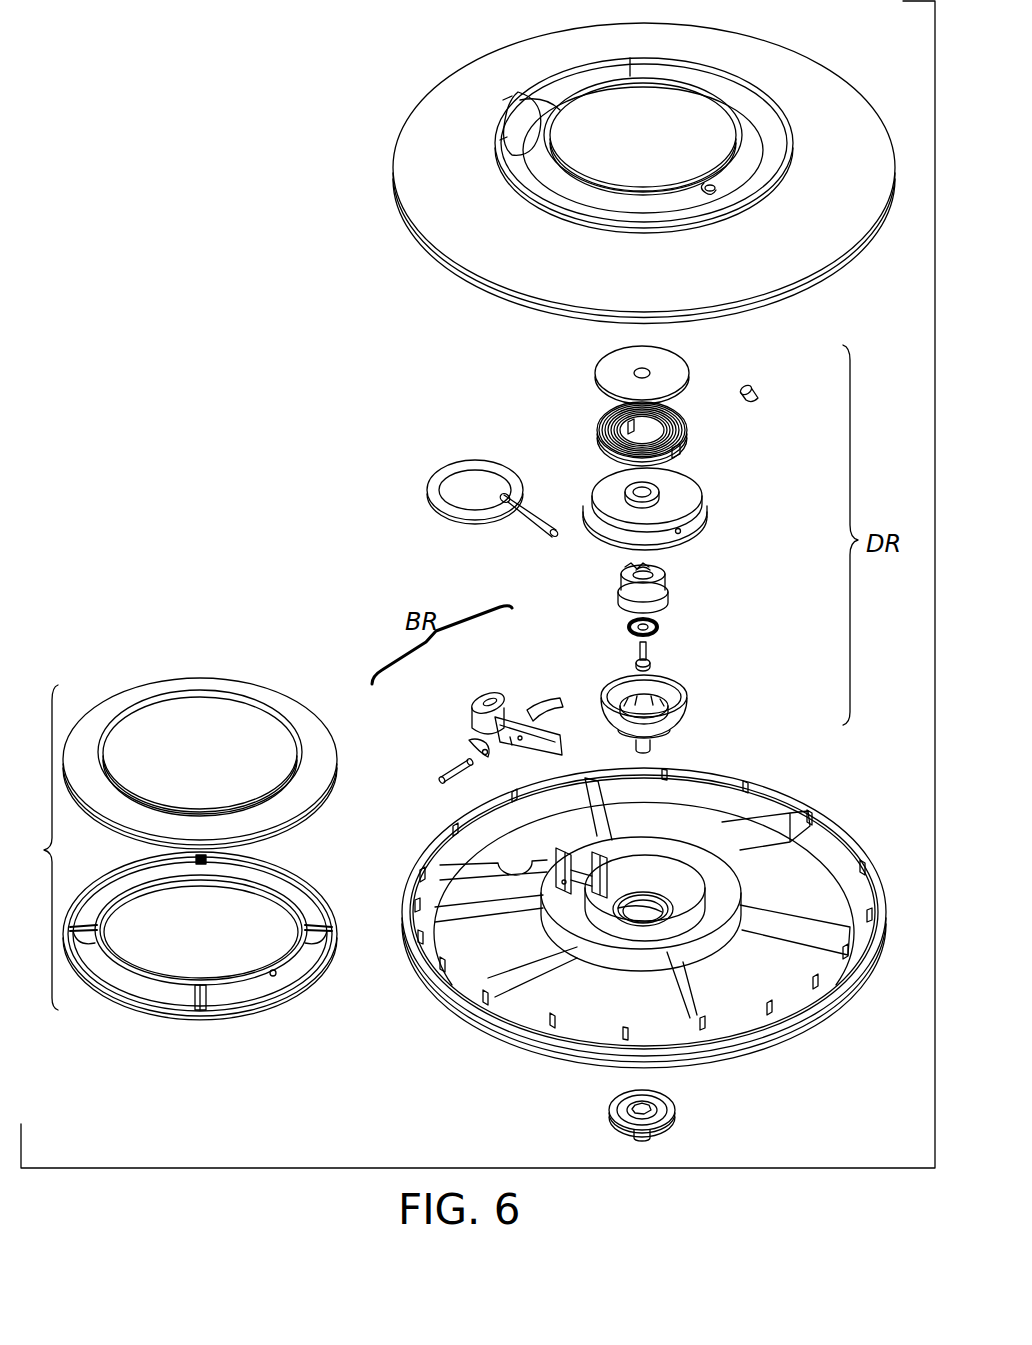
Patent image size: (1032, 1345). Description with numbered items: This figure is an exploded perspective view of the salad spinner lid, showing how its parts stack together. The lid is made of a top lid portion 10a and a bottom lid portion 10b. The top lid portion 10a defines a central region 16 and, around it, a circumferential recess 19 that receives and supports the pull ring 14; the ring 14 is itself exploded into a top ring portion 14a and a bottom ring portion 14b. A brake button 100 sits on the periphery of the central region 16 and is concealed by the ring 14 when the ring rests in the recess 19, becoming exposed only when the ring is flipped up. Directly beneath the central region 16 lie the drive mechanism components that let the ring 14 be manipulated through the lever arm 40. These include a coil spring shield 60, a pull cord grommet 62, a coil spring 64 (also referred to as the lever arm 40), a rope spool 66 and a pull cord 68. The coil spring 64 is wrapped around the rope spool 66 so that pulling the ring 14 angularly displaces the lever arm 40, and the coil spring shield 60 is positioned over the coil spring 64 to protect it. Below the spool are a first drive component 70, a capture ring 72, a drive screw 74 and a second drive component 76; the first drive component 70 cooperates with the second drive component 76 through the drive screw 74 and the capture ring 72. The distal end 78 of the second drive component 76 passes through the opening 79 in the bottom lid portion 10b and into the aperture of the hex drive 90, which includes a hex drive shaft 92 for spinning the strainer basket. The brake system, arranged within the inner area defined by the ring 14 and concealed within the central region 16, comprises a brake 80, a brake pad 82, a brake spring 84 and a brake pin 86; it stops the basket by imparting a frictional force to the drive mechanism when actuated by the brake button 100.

The top lid portion 10a is at (790, 66).
The bottom lid portion 10b is at (847, 833).
The ring 14 is at (202, 827).
The top ring portion 14a is at (305, 712).
The bottom ring portion 14b is at (302, 877).
The central region 16 is at (571, 112).
The circumferential recess 19 is at (518, 126).
The lever arm 40 is at (695, 434).
The coil spring shield 60 is at (690, 365).
The pull cord grommet 62 is at (760, 396).
The coil spring 64 is at (688, 413).
The rope spool 66 is at (695, 512).
The pull cord 68 is at (470, 465).
The first drive component 70 is at (672, 590).
The capture ring 72 is at (668, 628).
The drive screw 74 is at (654, 655).
The second drive component 76 is at (690, 700).
The distal end 78 is at (656, 744).
The opening 79 is at (613, 912).
The brake 80 is at (483, 703).
The brake pad 82 is at (536, 697).
The brake spring 84 is at (467, 743).
The brake pin 86 is at (458, 758).
The hex drive 90 is at (677, 1108).
The hex drive shaft 92 is at (655, 1138).
The brake button 100 is at (712, 188).